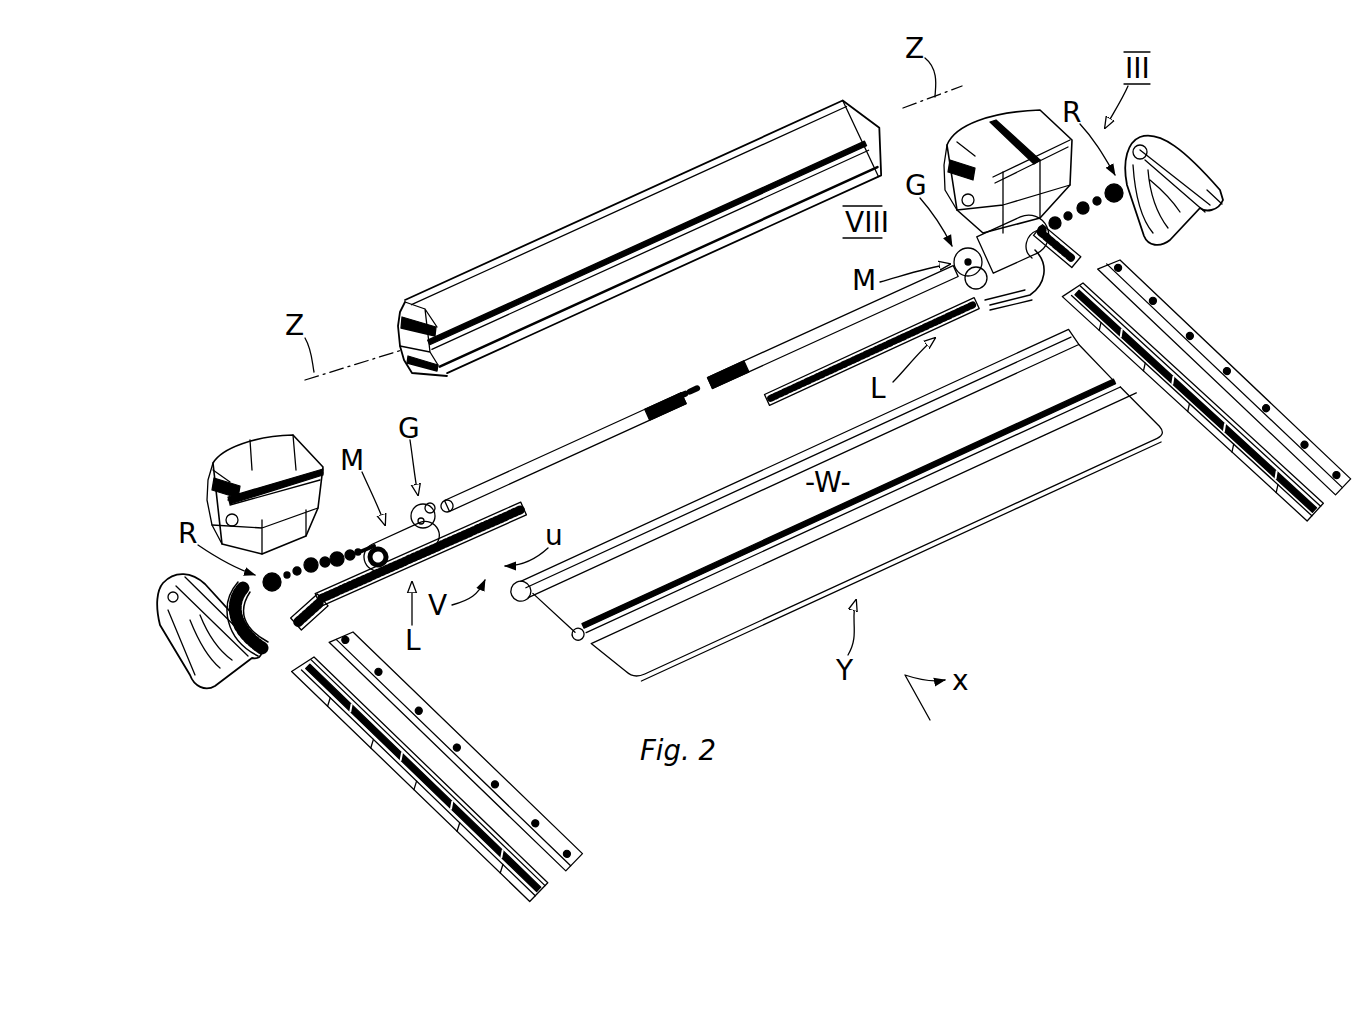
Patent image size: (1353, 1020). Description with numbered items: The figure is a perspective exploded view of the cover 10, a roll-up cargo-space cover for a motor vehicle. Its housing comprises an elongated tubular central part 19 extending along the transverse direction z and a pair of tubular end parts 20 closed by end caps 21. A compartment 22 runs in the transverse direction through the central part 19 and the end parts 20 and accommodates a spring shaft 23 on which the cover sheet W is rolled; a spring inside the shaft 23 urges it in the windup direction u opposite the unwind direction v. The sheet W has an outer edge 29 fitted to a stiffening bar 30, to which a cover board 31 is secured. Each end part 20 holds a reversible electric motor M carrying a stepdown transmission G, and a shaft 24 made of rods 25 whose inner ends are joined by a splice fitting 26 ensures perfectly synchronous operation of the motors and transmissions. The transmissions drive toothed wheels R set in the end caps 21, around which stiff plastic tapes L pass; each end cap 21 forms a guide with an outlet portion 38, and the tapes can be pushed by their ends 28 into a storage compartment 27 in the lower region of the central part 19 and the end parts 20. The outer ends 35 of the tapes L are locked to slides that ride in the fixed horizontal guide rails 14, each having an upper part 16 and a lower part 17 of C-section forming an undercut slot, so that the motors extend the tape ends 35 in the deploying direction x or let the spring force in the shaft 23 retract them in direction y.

The cover 10 is at (445, 185).
The guide rails 14 is at (537, 775).
The upper part 16 is at (440, 712).
The lower part 17 is at (420, 800).
The tubular central part 19 is at (628, 186).
The tubular end parts 20 is at (243, 425).
The end caps 21 is at (165, 560).
The compartment 22 is at (212, 462).
The spring shaft 23 is at (520, 620).
The shaft 24 is at (525, 460).
The rods 25 is at (600, 422).
The splice fitting 26 is at (683, 392).
The storage compartment 27 is at (955, 195).
The end of the tape 28 is at (492, 513).
The outer edge 29 is at (1010, 416).
The stiffening bar 30 is at (580, 660).
The cover board 31 is at (925, 565).
The end of the tape 35 is at (1098, 246).
The outlet portions 38 is at (1215, 195).